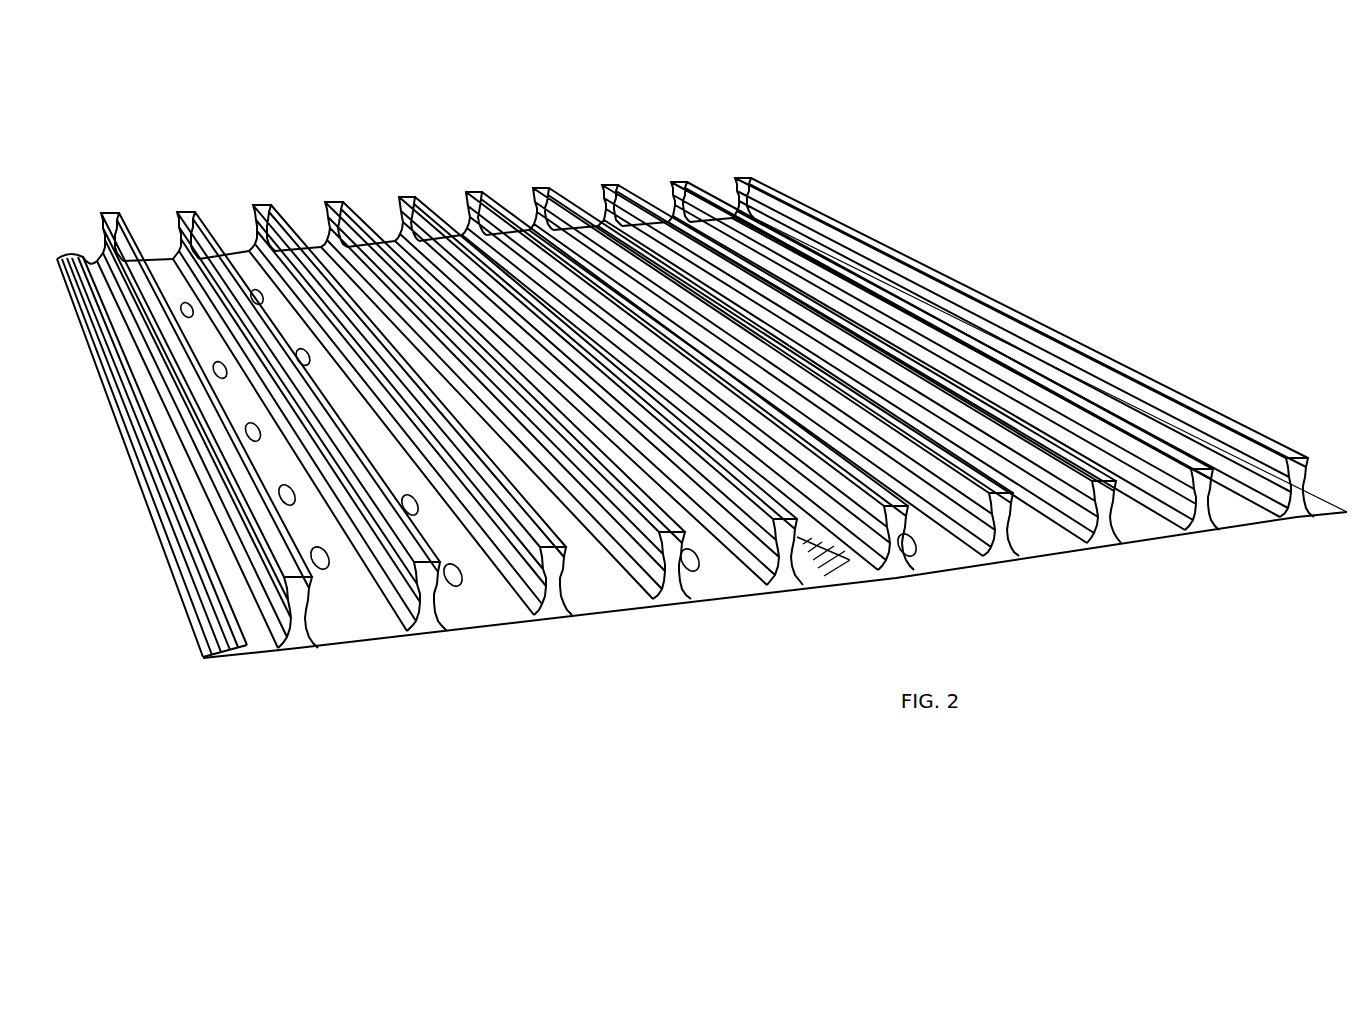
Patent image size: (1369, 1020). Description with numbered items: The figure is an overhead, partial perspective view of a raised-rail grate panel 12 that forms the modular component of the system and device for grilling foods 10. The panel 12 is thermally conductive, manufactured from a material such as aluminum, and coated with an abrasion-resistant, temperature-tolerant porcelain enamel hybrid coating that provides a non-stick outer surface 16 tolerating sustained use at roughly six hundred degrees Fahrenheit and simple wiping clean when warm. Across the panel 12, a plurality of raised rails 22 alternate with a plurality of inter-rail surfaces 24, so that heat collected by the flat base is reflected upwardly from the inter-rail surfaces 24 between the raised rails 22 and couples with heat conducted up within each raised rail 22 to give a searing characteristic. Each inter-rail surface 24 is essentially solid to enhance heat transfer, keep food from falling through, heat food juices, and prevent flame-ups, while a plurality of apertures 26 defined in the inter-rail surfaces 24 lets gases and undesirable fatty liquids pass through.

The system and device for grilling foods 10 is at (903, 104).
The raised-rail grate panel 12 is at (1040, 317).
The non-stick outer surface 16 is at (858, 270).
The raised rail 22 is at (498, 195).
The inter-rail surface 24 is at (242, 258).
The aperture 26 is at (112, 255).